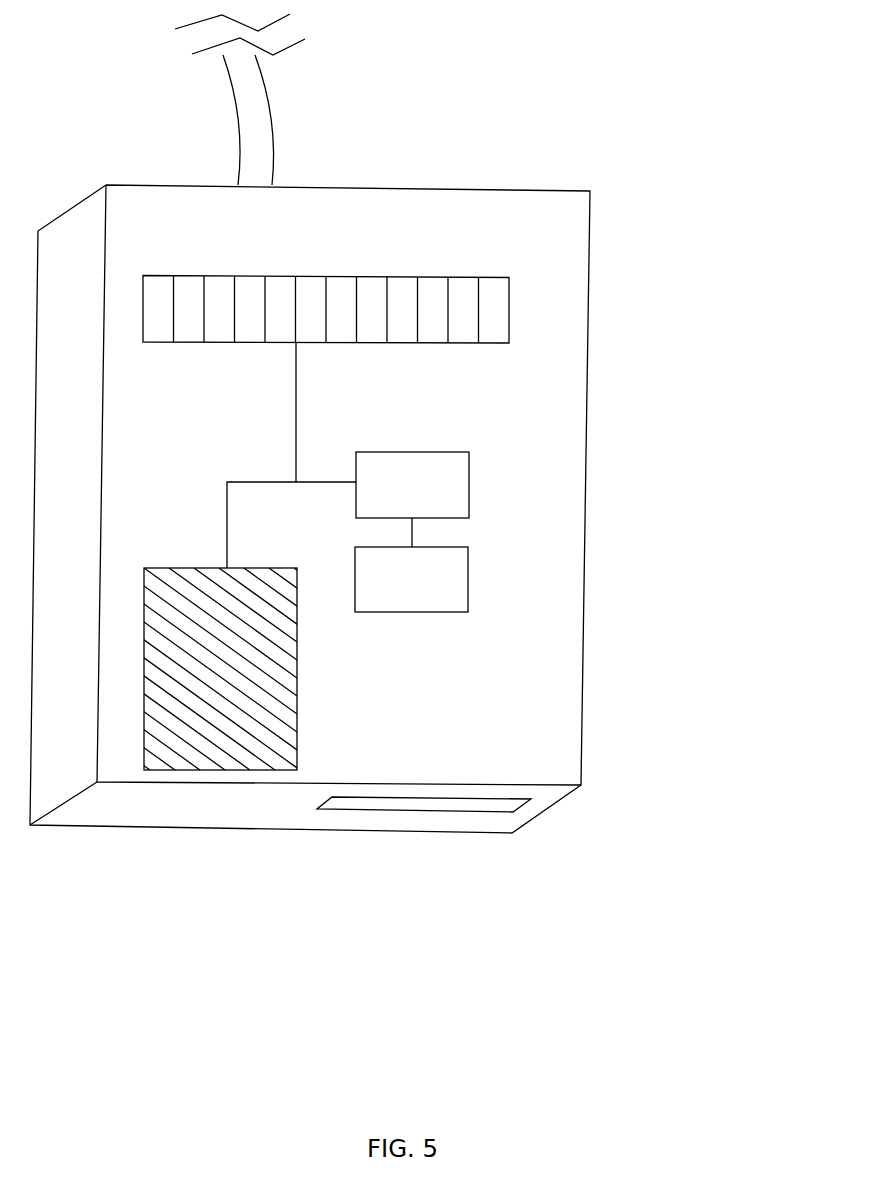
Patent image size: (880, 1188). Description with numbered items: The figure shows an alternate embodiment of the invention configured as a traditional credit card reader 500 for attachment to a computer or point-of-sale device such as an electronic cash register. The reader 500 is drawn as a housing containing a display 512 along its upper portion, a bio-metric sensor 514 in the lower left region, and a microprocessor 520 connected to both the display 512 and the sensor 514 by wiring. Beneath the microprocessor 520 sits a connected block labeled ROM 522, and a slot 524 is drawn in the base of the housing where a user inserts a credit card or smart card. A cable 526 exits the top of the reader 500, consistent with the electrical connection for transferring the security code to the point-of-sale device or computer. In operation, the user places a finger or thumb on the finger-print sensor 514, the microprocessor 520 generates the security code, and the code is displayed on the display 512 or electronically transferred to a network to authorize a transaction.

The credit card reader 500 is at (692, 93).
The display 512 is at (377, 343).
The bio-metric sensor 514 is at (297, 722).
The microprocessor 520 is at (469, 483).
The ROM 522 is at (468, 580).
The card slot 524 is at (438, 816).
The cable 526 is at (272, 120).